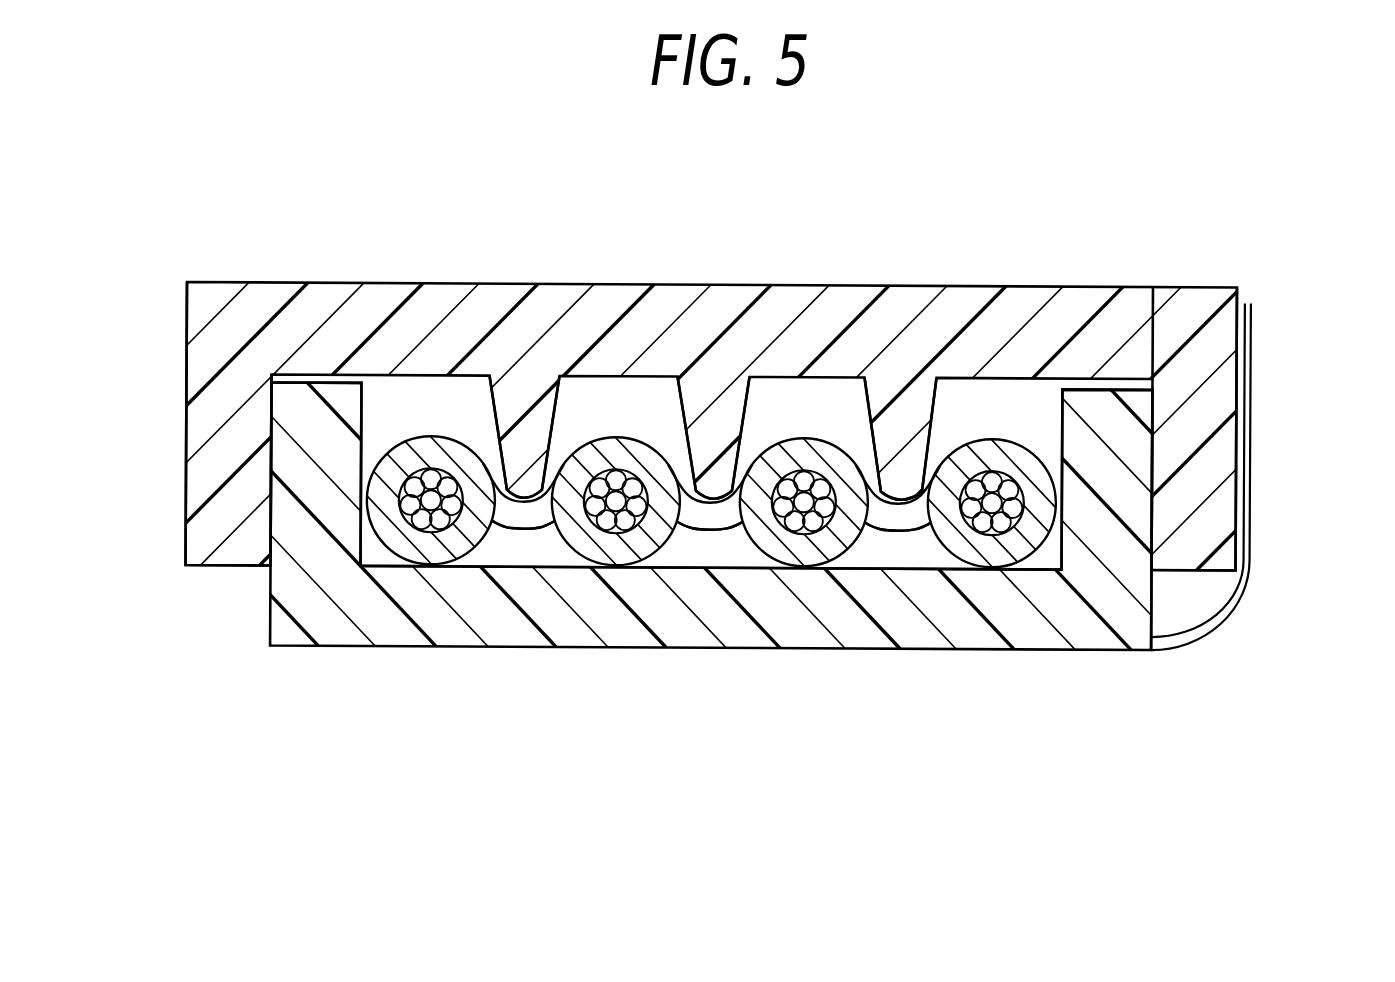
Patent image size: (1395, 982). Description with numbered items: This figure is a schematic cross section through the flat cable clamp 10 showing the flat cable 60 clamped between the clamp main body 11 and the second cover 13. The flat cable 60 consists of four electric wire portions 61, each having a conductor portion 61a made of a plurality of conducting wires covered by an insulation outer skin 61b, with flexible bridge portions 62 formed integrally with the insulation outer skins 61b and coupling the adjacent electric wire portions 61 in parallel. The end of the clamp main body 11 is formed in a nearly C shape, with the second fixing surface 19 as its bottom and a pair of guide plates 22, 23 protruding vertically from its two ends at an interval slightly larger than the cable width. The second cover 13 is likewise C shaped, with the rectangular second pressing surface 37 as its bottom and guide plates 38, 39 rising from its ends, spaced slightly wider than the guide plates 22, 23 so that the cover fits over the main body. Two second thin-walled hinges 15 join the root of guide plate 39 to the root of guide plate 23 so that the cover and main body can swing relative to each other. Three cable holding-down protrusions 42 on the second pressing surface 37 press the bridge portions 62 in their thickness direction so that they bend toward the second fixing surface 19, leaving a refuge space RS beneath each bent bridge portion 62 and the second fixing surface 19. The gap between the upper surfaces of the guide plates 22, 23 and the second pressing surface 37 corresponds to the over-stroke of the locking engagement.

The flat cable clamp 10 is at (670, 693).
The clamp main body 11 is at (877, 596).
The second cover 13 is at (1068, 282).
The second thin-walled hinge 15 is at (1246, 590).
The second fixing surface 19 is at (800, 545).
The guide plate 22 is at (309, 487).
The guide plate 23 is at (1113, 482).
The second pressing surface 37 is at (1110, 438).
The guide plate 38 is at (215, 470).
The guide plate 39 is at (1227, 507).
The cable holding-down protrusion 42 is at (897, 443).
The flat cable 60 is at (468, 572).
The electric wire portion 61 is at (435, 535).
The conductor portion 61a is at (1009, 353).
The insulation outer skin 61b is at (993, 369).
The bridge portion 62 is at (712, 545).
The refuge space RS is at (520, 545).